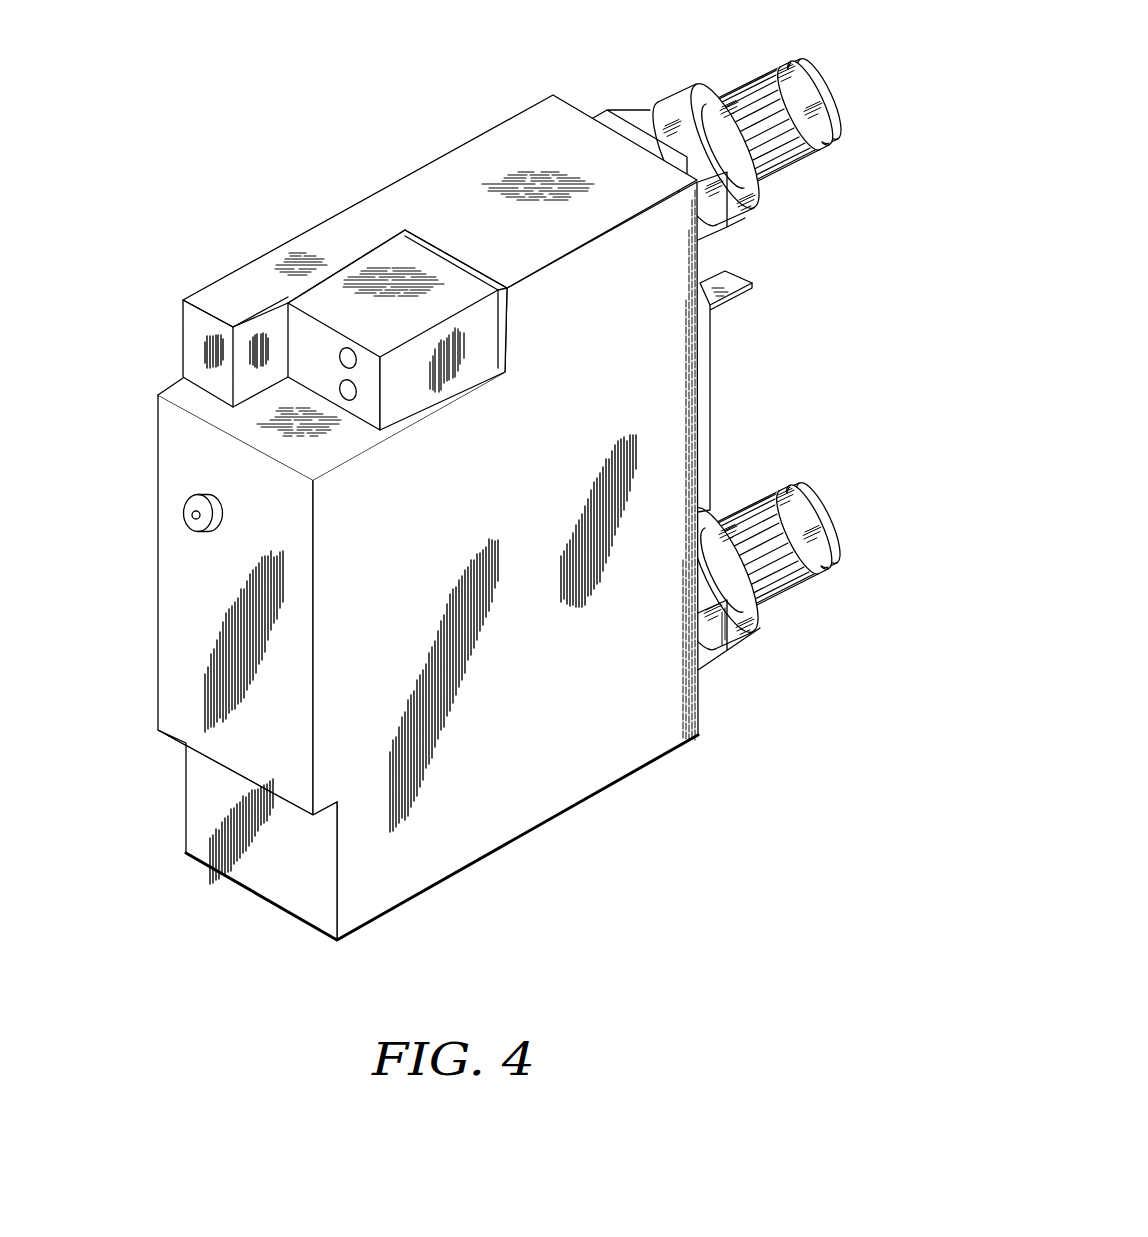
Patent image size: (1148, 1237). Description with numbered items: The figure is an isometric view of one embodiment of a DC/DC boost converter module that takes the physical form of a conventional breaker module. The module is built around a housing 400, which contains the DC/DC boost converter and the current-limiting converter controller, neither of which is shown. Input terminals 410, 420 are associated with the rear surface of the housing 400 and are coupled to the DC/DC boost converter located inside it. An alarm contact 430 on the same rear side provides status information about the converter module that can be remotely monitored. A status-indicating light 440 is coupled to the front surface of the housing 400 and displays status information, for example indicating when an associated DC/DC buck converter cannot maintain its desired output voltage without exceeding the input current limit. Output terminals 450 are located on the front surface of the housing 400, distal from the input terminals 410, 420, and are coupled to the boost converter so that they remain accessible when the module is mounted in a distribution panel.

The housing 400 is at (410, 173).
The input terminal 410 is at (818, 63).
The input terminal 420 is at (817, 488).
The alarm contact 430 is at (742, 275).
The status-indicating light 440 is at (182, 508).
The output terminals 450 is at (353, 362).